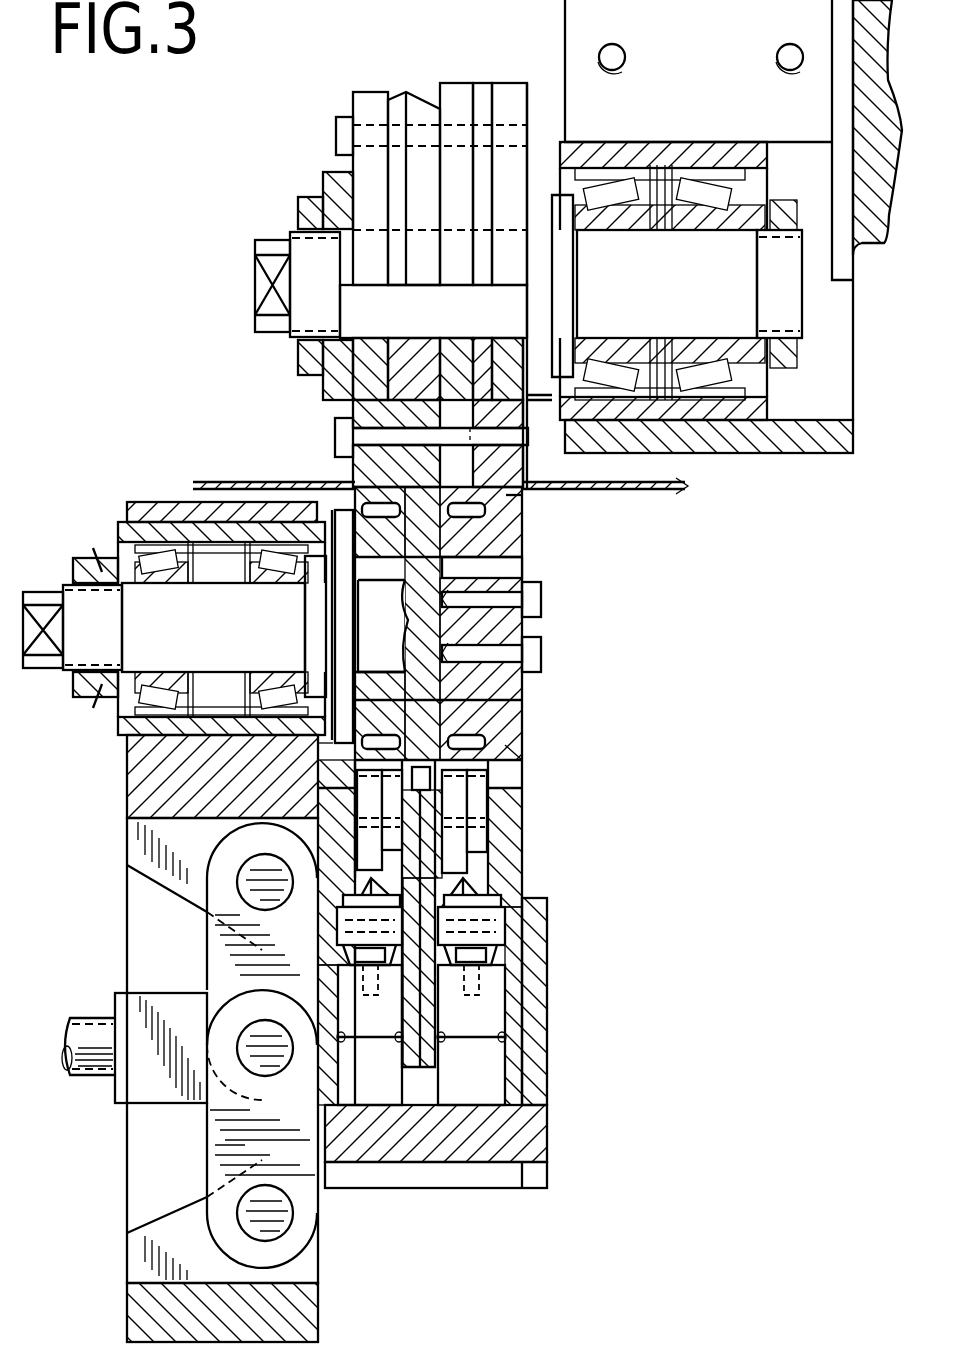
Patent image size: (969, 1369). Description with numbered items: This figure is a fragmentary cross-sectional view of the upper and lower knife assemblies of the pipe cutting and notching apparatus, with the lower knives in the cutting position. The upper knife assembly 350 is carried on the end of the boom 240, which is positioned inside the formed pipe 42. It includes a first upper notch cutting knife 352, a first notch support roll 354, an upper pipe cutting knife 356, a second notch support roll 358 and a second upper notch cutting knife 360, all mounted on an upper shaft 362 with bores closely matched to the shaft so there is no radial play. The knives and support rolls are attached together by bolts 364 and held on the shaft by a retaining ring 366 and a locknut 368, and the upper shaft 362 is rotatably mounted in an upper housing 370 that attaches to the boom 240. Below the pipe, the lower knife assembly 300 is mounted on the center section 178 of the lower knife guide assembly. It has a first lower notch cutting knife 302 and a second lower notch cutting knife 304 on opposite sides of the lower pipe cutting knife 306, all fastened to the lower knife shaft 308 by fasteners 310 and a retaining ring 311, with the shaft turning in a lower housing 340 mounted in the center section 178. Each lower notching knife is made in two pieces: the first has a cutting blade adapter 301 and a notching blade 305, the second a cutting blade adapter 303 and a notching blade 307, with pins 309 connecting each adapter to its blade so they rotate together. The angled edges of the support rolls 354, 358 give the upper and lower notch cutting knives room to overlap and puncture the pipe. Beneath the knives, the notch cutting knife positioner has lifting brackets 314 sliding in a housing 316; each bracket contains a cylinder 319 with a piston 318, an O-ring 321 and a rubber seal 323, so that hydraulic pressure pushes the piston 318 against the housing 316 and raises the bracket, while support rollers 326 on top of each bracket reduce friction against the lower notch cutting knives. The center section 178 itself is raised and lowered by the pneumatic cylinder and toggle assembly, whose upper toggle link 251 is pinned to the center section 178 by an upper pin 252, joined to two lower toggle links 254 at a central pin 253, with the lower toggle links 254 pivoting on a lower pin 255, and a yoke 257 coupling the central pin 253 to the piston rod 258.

The pipe 42 is at (237, 480).
The center section 178 is at (148, 505).
The boom 240 is at (866, 30).
The upper toggle link 251 is at (217, 978).
The upper pin 252 is at (260, 868).
The central pin 253 is at (280, 1060).
The lower toggle links 254 is at (220, 1118).
The lower pin 255 is at (250, 1205).
The yoke 257 is at (130, 1080).
The piston rod 258 is at (90, 1022).
The lower knife assembly 300 is at (441, 818).
The cutting blade adapter 301 is at (318, 748).
The first lower notch cutting knife 302 is at (352, 495).
The cutting blade adapter 303 is at (480, 705).
The second lower notch cutting knife 304 is at (506, 500).
The notching blade 305 is at (323, 770).
The lower pipe cutting knife 306 is at (425, 565).
The notching blade 307 is at (487, 778).
The lower knife shaft 308 is at (80, 610).
The pins 309 is at (470, 515).
The fasteners 310 is at (535, 655).
The retaining ring 311 is at (512, 752).
The lifting brackets 314 is at (495, 886).
The housing 316 is at (535, 1010).
The piston 318 is at (421, 1035).
The cylinder 319 is at (500, 990).
The O-ring 321 is at (515, 1040).
The rubber seal 323 is at (520, 945).
The support rollers 326 is at (455, 855).
The lower housing 340 is at (118, 530).
The upper knife assembly 350 is at (321, 254).
The first upper notch cutting knife 352 is at (367, 95).
The first notch support roll 354 is at (406, 92).
The upper pipe cutting knife 356 is at (458, 98).
The second notch support roll 358 is at (486, 92).
The second upper notch cutting knife 360 is at (507, 92).
The upper shaft 362 is at (292, 280).
The bolts 364 is at (336, 125).
The retaining ring 366 is at (337, 180).
The locknut 368 is at (312, 210).
The upper housing 370 is at (655, 150).